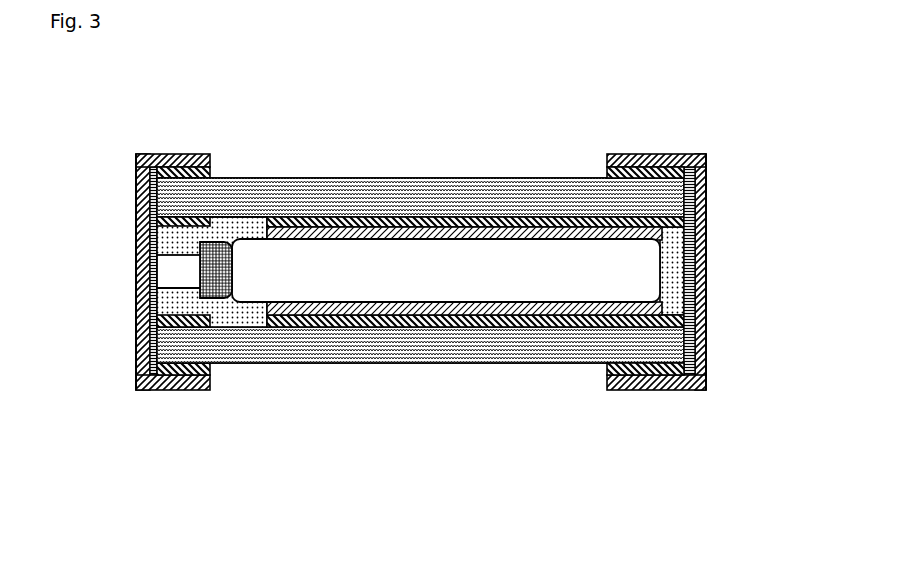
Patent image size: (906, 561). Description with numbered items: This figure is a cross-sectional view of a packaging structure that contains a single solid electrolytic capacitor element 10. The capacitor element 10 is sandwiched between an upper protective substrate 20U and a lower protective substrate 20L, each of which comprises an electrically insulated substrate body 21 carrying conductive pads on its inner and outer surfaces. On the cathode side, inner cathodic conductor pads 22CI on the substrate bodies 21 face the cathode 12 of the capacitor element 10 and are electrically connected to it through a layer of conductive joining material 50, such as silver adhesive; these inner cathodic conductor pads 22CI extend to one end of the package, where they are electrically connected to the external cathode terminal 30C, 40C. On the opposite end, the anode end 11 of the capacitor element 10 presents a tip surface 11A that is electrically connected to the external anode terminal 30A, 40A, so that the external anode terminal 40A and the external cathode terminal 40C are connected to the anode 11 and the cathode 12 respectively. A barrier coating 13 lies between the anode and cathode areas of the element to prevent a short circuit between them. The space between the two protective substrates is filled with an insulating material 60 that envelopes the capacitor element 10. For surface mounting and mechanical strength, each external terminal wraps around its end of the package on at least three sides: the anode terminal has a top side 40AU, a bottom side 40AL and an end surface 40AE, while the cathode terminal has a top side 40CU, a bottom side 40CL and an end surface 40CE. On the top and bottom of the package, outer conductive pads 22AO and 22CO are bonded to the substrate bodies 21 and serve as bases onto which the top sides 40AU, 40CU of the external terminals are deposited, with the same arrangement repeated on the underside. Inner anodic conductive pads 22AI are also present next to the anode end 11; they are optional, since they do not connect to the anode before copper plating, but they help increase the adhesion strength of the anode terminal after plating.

The capacitor element 10 is at (447, 269).
The anode end 11 is at (182, 270).
The tip surface of the anode end 11A is at (160, 280).
The cathode 12 is at (465, 262).
The barrier coating 13 is at (215, 218).
The upper protective substrate 20U is at (435, 105).
The lower protective substrate 20L is at (418, 428).
The substrate body 21 is at (450, 190).
The outer anodic conductive pad 22AO is at (212, 174).
The inner anodic conductive pad 22AI is at (232, 240).
The inner cathodic conductor pad 22CI is at (568, 217).
The outer cathodic conductive pad 22CO is at (663, 154).
The external anode terminal 30A is at (140, 226).
The external cathode terminal 30C is at (706, 252).
The external anode terminal 40A is at (134, 196).
The top side of the external anode terminal 40AU is at (168, 153).
The bottom side of the external anode terminal 40AL is at (168, 393).
The end surface of the external anode terminal 40AE is at (134, 286).
The external cathode terminal 40C is at (730, 165).
The top side of the external cathode terminal 40CU is at (677, 154).
The bottom side of the external cathode terminal 40CL is at (672, 392).
The end surface of the external cathode terminal 40CE is at (707, 335).
The conductive joining material 50 is at (507, 345).
The insulating material 60 is at (227, 298).